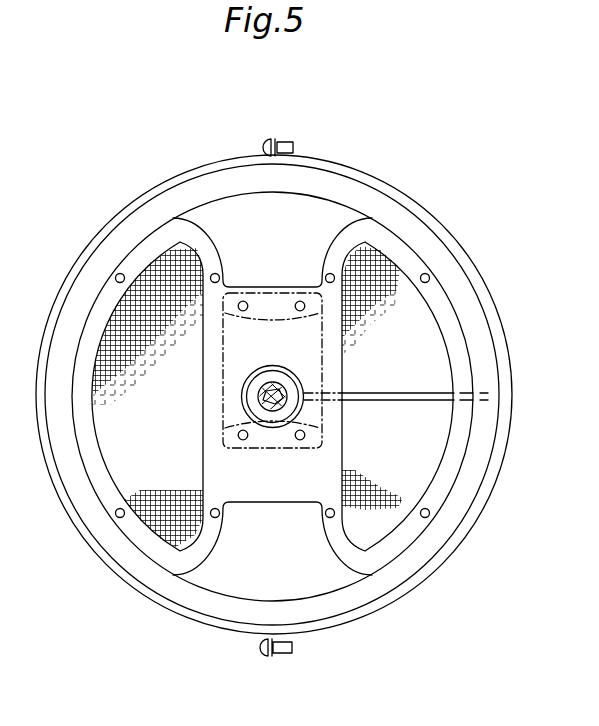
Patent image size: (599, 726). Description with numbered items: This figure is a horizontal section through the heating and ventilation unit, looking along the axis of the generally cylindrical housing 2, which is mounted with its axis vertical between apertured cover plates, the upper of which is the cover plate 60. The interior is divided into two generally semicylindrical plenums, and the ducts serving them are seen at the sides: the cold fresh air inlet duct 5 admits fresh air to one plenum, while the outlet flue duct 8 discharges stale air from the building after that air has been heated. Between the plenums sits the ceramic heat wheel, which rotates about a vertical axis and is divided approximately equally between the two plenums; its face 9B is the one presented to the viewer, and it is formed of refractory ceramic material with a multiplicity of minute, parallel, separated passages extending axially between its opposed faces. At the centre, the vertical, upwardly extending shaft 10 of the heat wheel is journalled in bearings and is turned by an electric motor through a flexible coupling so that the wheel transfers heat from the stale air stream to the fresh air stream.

The housing 2 is at (492, 298).
The upper cover plate 60 is at (103, 247).
The outlet flue duct 8 is at (120, 460).
The cold fresh air inlet duct 5 is at (410, 472).
The heat wheel face 9B is at (201, 471).
The shaft 10 is at (262, 396).